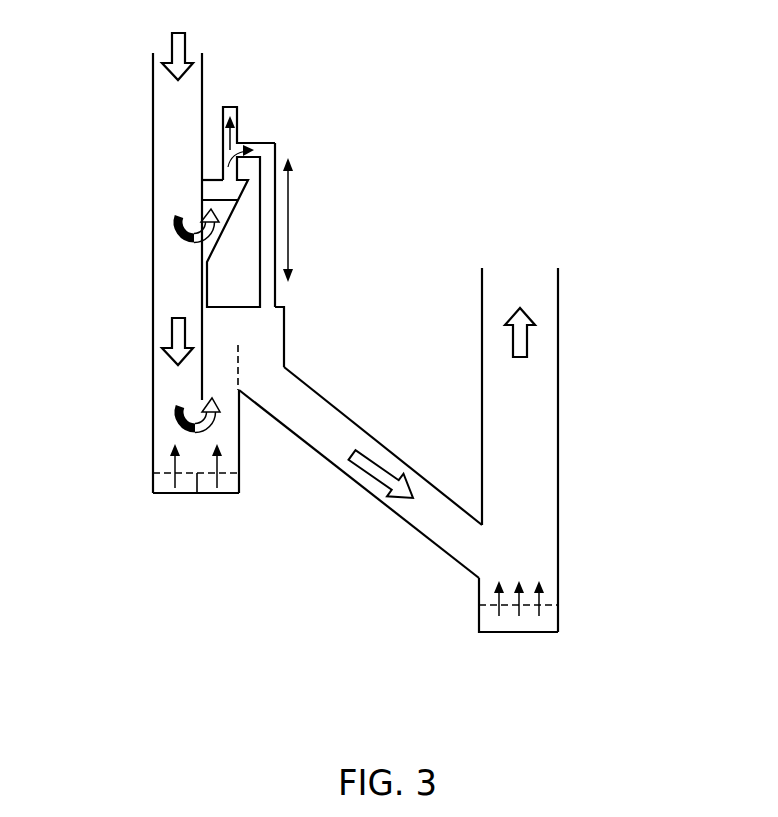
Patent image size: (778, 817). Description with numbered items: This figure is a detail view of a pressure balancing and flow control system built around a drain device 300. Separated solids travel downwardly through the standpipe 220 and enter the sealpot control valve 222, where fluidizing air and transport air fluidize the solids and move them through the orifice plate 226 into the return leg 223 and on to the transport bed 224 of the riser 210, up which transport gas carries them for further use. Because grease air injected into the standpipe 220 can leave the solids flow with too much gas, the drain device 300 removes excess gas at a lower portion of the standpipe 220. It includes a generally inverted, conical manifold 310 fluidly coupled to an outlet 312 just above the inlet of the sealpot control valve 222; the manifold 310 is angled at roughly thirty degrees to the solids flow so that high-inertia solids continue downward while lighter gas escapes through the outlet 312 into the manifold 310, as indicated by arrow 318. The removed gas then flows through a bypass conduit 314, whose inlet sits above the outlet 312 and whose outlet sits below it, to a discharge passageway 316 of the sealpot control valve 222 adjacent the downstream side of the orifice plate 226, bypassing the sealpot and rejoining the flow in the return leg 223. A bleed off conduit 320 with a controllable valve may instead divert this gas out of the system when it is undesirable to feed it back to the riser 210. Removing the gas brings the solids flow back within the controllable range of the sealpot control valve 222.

The drain device 300 is at (349, 79).
The standpipe 220 is at (153, 135).
The sealpot control valve 222 is at (142, 412).
The gas flow arrow 318 is at (160, 227).
The outlet 312 is at (186, 260).
The conical manifold 310 is at (237, 215).
The bleed off conduit 320 is at (238, 110).
The bypass conduit 314 is at (275, 143).
The discharge passageway 316 is at (284, 307).
The orifice plate 226 is at (238, 365).
The return leg 223 is at (357, 480).
The riser 210 is at (558, 442).
The transport bed 224 is at (527, 632).